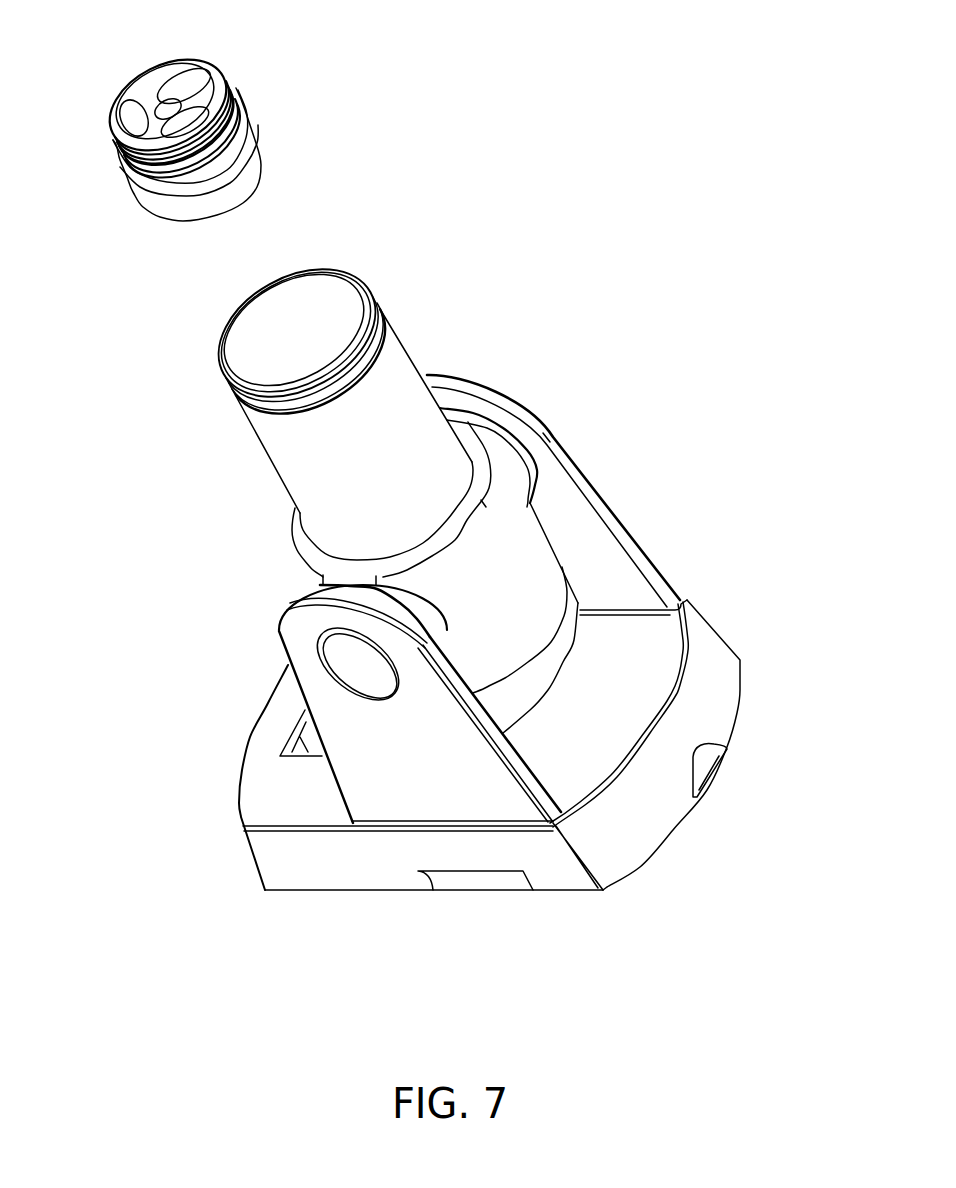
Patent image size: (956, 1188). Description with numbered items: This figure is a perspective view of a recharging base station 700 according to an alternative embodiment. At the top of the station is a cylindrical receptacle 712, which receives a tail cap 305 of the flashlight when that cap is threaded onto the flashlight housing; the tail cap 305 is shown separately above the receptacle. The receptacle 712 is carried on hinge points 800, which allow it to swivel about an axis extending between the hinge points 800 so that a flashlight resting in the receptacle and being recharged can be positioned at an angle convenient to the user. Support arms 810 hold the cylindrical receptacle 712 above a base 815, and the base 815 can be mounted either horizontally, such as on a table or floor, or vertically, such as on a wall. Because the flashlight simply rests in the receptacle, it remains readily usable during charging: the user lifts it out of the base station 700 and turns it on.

The tail cap 305 is at (255, 138).
The recharging base station 700 is at (575, 290).
The cylindrical receptacle 712 is at (392, 360).
The hinge points 800 is at (353, 668).
The support arms 810 is at (617, 520).
The base 815 is at (617, 741).